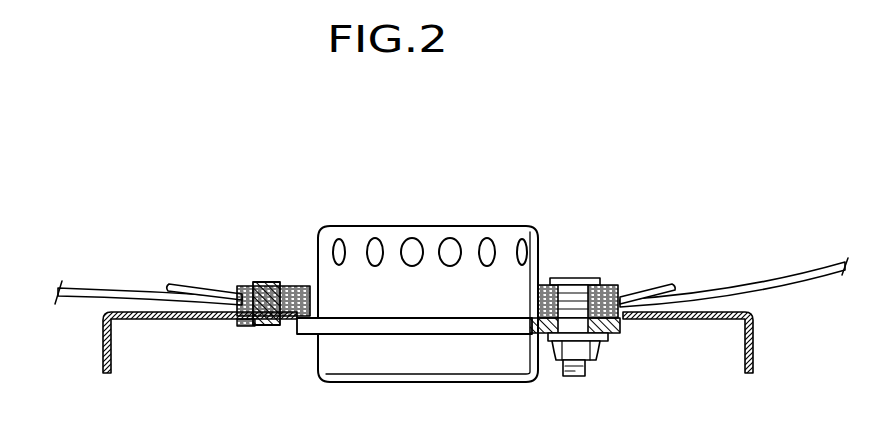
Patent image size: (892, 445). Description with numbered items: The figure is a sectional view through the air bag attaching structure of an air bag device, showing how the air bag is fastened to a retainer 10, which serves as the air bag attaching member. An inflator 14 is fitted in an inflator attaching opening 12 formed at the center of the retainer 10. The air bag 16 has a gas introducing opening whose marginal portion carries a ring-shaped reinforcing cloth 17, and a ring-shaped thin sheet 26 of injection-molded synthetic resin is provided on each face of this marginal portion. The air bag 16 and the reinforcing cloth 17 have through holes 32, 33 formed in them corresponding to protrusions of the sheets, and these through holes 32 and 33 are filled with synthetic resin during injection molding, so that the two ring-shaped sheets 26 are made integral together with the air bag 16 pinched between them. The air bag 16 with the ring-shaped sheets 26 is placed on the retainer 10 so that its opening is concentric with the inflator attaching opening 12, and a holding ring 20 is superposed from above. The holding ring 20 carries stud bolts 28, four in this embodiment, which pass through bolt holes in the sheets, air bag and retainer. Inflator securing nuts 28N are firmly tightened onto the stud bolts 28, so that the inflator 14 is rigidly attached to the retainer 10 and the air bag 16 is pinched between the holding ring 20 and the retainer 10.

The retainer 10 is at (152, 322).
The inflator attaching opening 12 is at (317, 300).
The inflator 14 is at (448, 228).
The air bag 16 is at (85, 290).
The reinforcing cloth 17 is at (180, 285).
The holding ring 20 is at (249, 294).
The ring-shaped sheet 26 is at (623, 290).
The stud bolt 28 is at (610, 296).
The inflator securing nut 28N is at (598, 343).
The through hole 32 is at (245, 326).
The through hole 33 is at (232, 322).